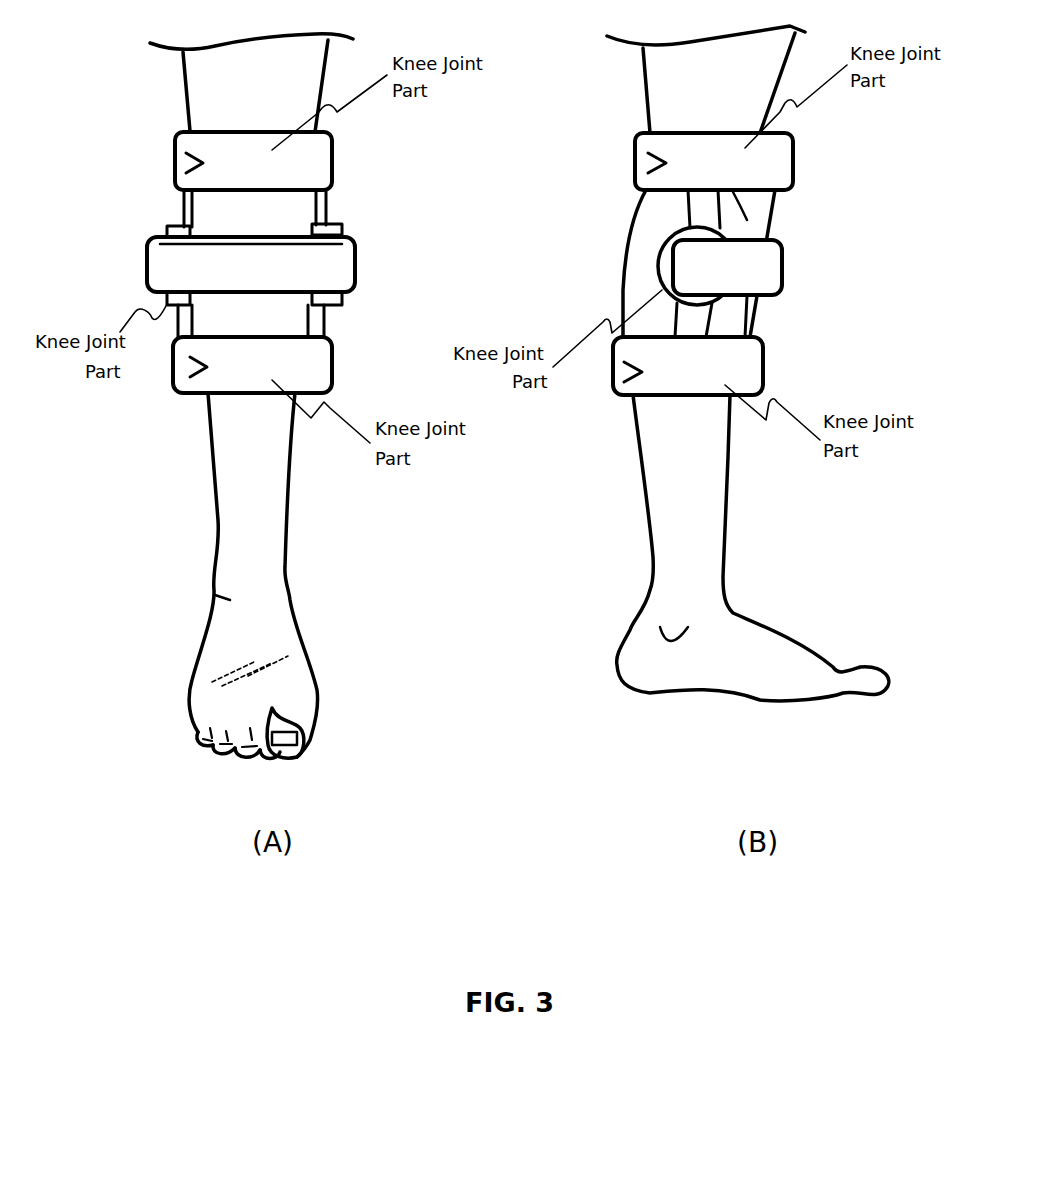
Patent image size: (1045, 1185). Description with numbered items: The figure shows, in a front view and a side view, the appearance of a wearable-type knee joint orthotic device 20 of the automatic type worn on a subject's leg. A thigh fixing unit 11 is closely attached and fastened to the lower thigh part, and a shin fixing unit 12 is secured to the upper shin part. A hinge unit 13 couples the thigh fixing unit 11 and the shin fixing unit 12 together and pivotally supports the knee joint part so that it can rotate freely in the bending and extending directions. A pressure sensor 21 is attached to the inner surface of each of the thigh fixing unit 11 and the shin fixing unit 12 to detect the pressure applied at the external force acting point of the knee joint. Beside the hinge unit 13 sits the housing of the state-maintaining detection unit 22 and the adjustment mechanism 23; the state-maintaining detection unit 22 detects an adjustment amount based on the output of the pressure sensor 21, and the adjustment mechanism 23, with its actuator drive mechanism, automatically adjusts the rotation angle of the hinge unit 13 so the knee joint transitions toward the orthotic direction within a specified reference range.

The thigh fixing unit 11 is at (297, 163).
The shin fixing unit 12 is at (308, 372).
The hinge unit 13 is at (153, 232).
The wearable-type knee joint orthotic device 20 is at (122, 138).
The pressure sensor 21 is at (177, 163).
The state-maintaining detection unit 22 is at (539, 266).
The adjustment mechanism 23 is at (358, 268).